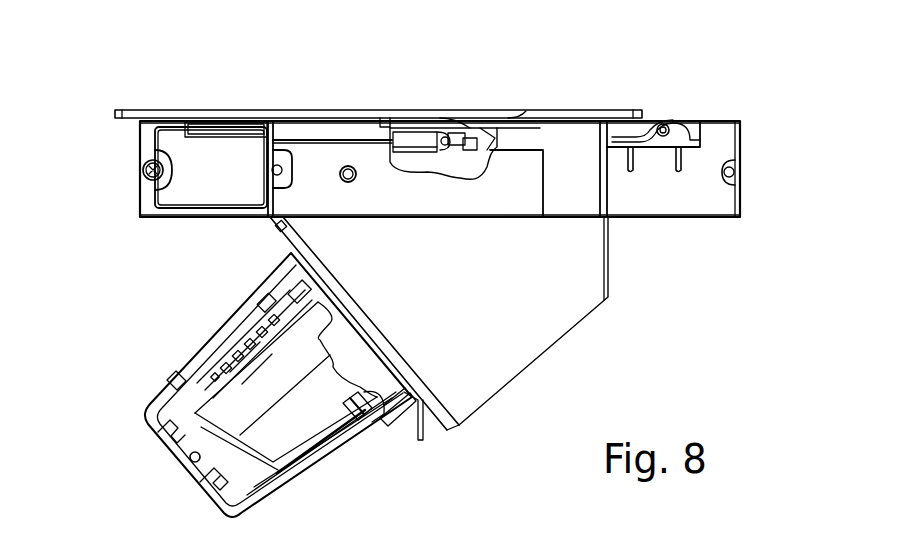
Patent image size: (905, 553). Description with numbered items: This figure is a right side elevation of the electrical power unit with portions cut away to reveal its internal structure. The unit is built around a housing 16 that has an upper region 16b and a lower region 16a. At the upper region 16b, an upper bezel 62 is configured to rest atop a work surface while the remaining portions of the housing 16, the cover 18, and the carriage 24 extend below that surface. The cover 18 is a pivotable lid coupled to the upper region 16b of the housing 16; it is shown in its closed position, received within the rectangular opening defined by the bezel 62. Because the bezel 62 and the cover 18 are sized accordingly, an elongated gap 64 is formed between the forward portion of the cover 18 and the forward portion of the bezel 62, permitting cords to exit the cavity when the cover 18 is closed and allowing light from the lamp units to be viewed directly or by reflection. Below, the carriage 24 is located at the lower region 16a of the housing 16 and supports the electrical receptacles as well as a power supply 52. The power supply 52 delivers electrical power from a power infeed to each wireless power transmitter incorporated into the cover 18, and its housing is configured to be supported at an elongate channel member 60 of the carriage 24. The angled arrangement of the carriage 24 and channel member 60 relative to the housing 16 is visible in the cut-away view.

The housing 16 is at (481, 120).
The lower region of housing 16a is at (607, 321).
The upper region of housing 16b is at (711, 112).
The cover 18 is at (548, 84).
The carriage 24 is at (225, 379).
The power supply 52 is at (149, 367).
The channel member 60 is at (207, 325).
The upper bezel 62 is at (118, 128).
The gap 64 is at (708, 115).